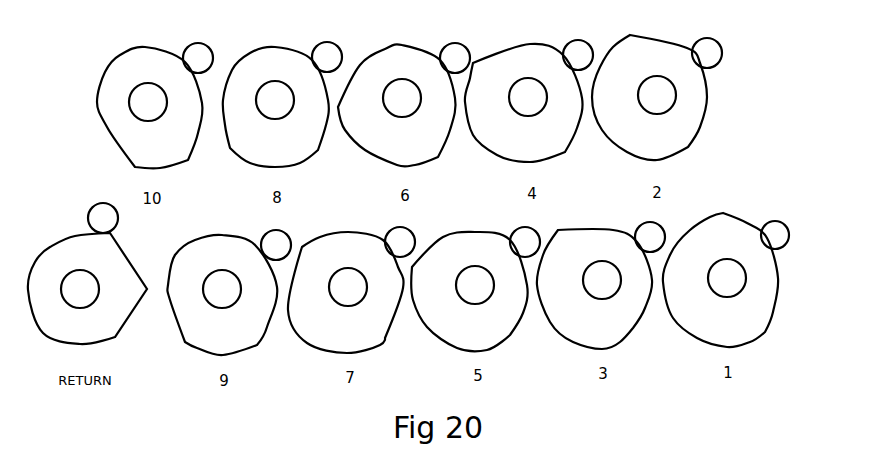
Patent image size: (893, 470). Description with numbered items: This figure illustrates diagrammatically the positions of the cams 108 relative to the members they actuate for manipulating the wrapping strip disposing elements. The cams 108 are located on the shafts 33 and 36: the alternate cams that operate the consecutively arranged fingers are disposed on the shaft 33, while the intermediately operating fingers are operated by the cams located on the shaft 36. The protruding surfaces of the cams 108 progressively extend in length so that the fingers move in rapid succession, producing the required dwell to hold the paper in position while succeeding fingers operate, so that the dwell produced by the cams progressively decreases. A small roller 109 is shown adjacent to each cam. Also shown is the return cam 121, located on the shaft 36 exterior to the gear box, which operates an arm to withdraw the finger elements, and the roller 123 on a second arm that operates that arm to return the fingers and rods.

The cams 108 is at (177, 147).
The roller 109 is at (457, 60).
The shaft 33 is at (146, 105).
The shaft 36 is at (75, 292).
The cam 121 is at (108, 313).
The roller 123 is at (97, 222).